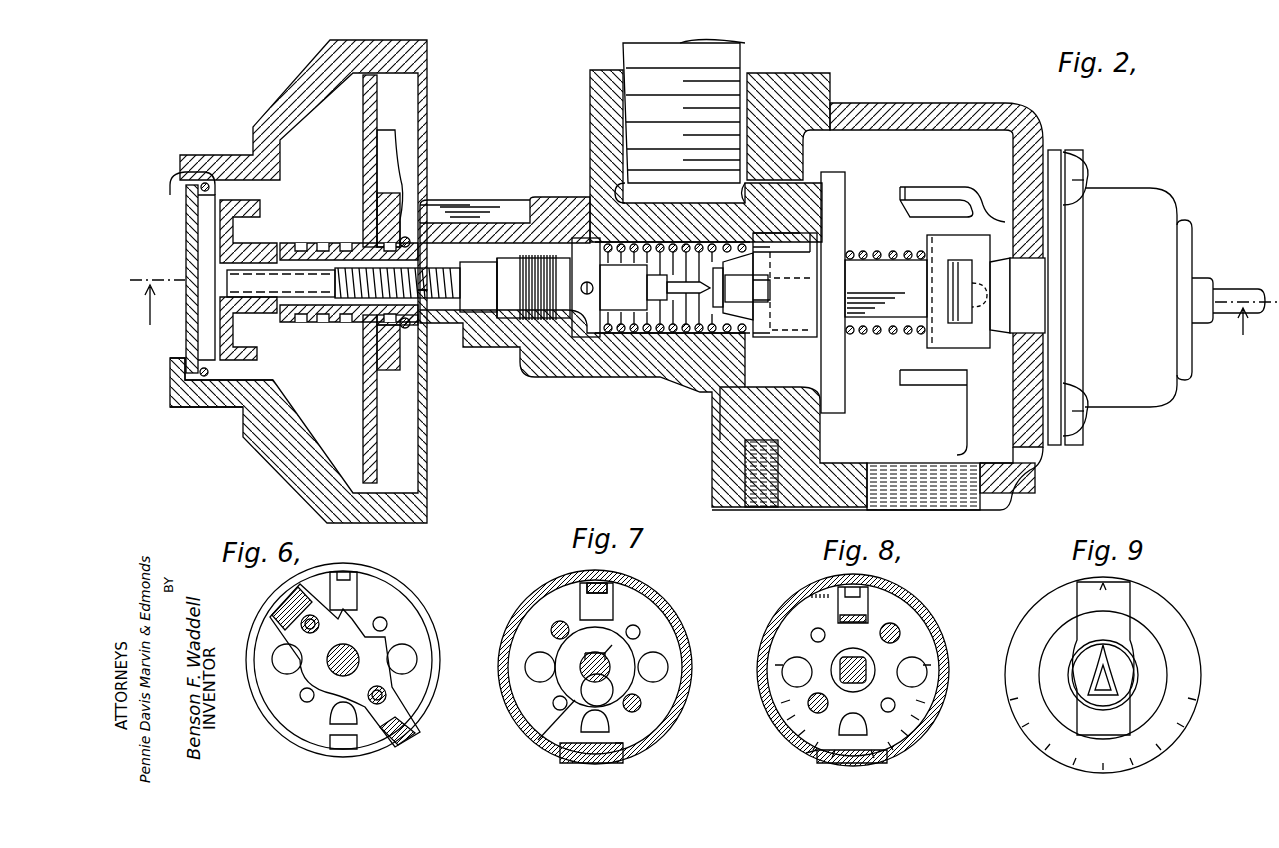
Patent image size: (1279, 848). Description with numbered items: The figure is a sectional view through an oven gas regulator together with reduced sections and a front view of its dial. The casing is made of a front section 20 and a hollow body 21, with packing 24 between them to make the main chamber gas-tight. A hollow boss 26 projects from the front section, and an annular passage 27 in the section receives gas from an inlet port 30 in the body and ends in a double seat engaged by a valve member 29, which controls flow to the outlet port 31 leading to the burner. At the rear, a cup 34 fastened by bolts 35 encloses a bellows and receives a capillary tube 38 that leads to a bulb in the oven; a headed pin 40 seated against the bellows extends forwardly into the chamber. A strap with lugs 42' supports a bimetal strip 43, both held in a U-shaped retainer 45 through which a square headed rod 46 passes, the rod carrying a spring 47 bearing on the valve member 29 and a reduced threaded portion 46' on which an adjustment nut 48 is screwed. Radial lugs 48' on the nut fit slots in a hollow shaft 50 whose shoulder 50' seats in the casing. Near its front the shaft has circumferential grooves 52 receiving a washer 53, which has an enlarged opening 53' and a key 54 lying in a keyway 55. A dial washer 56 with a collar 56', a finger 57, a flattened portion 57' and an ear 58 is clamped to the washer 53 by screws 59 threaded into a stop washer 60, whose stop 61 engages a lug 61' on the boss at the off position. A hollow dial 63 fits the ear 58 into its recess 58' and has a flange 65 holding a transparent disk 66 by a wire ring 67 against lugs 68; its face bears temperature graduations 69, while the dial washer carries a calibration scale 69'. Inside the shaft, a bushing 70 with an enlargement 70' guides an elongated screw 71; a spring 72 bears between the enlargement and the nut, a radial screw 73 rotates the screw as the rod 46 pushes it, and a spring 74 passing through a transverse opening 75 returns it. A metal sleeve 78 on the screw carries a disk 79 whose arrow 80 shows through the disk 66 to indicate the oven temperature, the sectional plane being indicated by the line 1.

In FIG. 2, the axis of the valve assembly 1 is at (690, 318).
In FIG. 2, the front section 20 is at (690, 413).
In FIG. 2, the hollow body 21 is at (940, 105).
In FIG. 2, the packing 24 is at (815, 78).
In FIG. 2, the hollow boss 26 is at (467, 325).
In FIG. 2, the annular passage 27 is at (745, 462).
In FIG. 2, the valve member 29 is at (840, 362).
In FIG. 2, the inlet port 30 is at (720, 93).
In FIG. 2, the outlet port 31 is at (965, 510).
In FIG. 2, the cup 34 is at (1160, 190).
In FIG. 2, the bolts 35 is at (1080, 166).
In FIG. 2, the capillary tube 38 is at (1242, 290).
In FIG. 2, the headed pin 40 is at (1037, 282).
In FIG. 2, the lugs 42' is at (987, 276).
In FIG. 2, the bimetal strip 43 is at (960, 325).
In FIG. 2, the U-shaped retainer 45 is at (945, 235).
In FIG. 2, the square headed rod 46 is at (885, 278).
In FIG. 2, the reduced threaded portion 46' is at (744, 253).
In FIG. 2, the spring 47 is at (905, 325).
In FIG. 2, the adjustment nut 48 is at (812, 272).
In FIG. 2, the radial lugs 48' is at (823, 197).
In FIG. 2, the hollow shaft 50 is at (482, 332).
In FIG. 2, the shoulder 50' is at (532, 335).
In FIG. 2, the circumferential grooves 52 is at (316, 324).
In FIG. 2, the washer 53 is at (381, 279).
In FIG. 7, the washer 53 is at (646, 704).
In FIG. 7, the enlarged opening 53' is at (534, 730).
In FIG. 7, the key 54 is at (595, 655).
In FIG. 8, the key 54 is at (870, 660).
In FIG. 6, the keyway 55 is at (345, 648).
In FIG. 2, the dial washer 56 is at (416, 283).
In FIG. 7, the dial washer 56 is at (641, 667).
In FIG. 8, the dial washer 56 is at (907, 669).
In FIG. 2, the collar 56' is at (349, 316).
In FIG. 7, the finger 57 is at (627, 590).
In FIG. 8, the finger 57 is at (894, 597).
In FIG. 7, the flattened peripheral portion 57' is at (649, 758).
In FIG. 7, the ear 58 is at (595, 682).
In FIG. 8, the ear 58 is at (853, 684).
In FIG. 8, the recess 58' is at (809, 772).
In FIG. 6, the screws 59 is at (300, 624).
In FIG. 7, the screws 59 is at (550, 630).
In FIG. 8, the screws 59 is at (898, 630).
In FIG. 2, the stop washer 60 is at (420, 335).
In FIG. 6, the stop washer 60 is at (372, 654).
In FIG. 6, the stop 61 is at (358, 654).
In FIG. 2, the lug 61' is at (505, 202).
In FIG. 2, the hollow dial 63 is at (290, 468).
In FIG. 9, the hollow dial 63 is at (1160, 612).
In FIG. 2, the flange 65 is at (175, 364).
In FIG. 9, the flange 65 is at (1075, 640).
In FIG. 2, the transparent disk 66 is at (187, 230).
In FIG. 9, the transparent disk 66 is at (1120, 660).
In FIG. 2, the wire ring 67 is at (172, 188).
In FIG. 2, the lugs 68 is at (215, 392).
In FIG. 9, the scale of temperature graduations 69 is at (1100, 688).
In FIG. 8, the scale 69' is at (874, 676).
In FIG. 2, the bushing 70 is at (533, 235).
In FIG. 2, the enlargement 70' is at (687, 156).
In FIG. 2, the elongated screw 71 is at (690, 318).
In FIG. 2, the spring 72 is at (655, 338).
In FIG. 2, the screw 73 is at (587, 340).
In FIG. 2, the spring 74 is at (440, 225).
In FIG. 2, the transverse opening 75 is at (338, 272).
In FIG. 2, the metal sleeve 78 is at (285, 268).
In FIG. 2, the disk 79 is at (222, 253).
In FIG. 9, the arrow 80 is at (1115, 688).